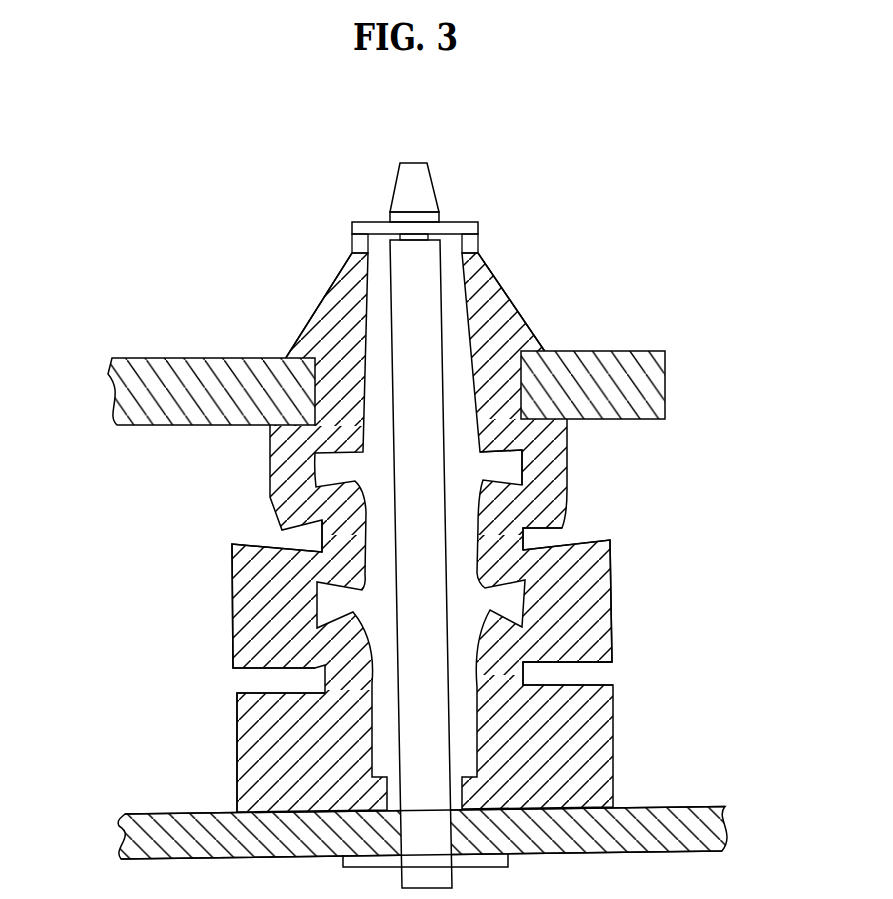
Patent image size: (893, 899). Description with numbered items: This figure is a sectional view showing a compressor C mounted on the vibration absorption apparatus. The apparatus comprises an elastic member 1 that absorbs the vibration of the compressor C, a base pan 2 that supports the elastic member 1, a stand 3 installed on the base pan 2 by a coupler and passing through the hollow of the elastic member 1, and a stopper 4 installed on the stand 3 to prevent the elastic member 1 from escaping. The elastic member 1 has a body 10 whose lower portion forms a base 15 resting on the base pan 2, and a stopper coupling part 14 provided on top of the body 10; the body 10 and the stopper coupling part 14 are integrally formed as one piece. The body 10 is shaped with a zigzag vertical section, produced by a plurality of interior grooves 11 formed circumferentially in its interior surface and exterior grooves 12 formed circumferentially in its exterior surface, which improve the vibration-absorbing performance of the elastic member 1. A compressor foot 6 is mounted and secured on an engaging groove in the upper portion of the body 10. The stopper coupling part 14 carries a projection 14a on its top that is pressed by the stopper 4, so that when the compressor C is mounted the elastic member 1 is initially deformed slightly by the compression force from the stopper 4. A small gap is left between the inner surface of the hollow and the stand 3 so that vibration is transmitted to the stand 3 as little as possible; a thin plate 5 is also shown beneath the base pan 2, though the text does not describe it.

The elastic member 1 is at (632, 562).
The base pan 2 is at (675, 807).
The stand 3 is at (432, 350).
The stopper 4 is at (466, 222).
The support plate 5 is at (508, 862).
The compressor foot 6 is at (665, 383).
The body 10 is at (243, 578).
The interior grooves 11 is at (518, 462).
The exterior grooves 12 is at (535, 525).
The stopper coupling part 14 is at (316, 307).
The projection 14a is at (360, 243).
The base 15 is at (252, 752).
The compressor C is at (90, 395).